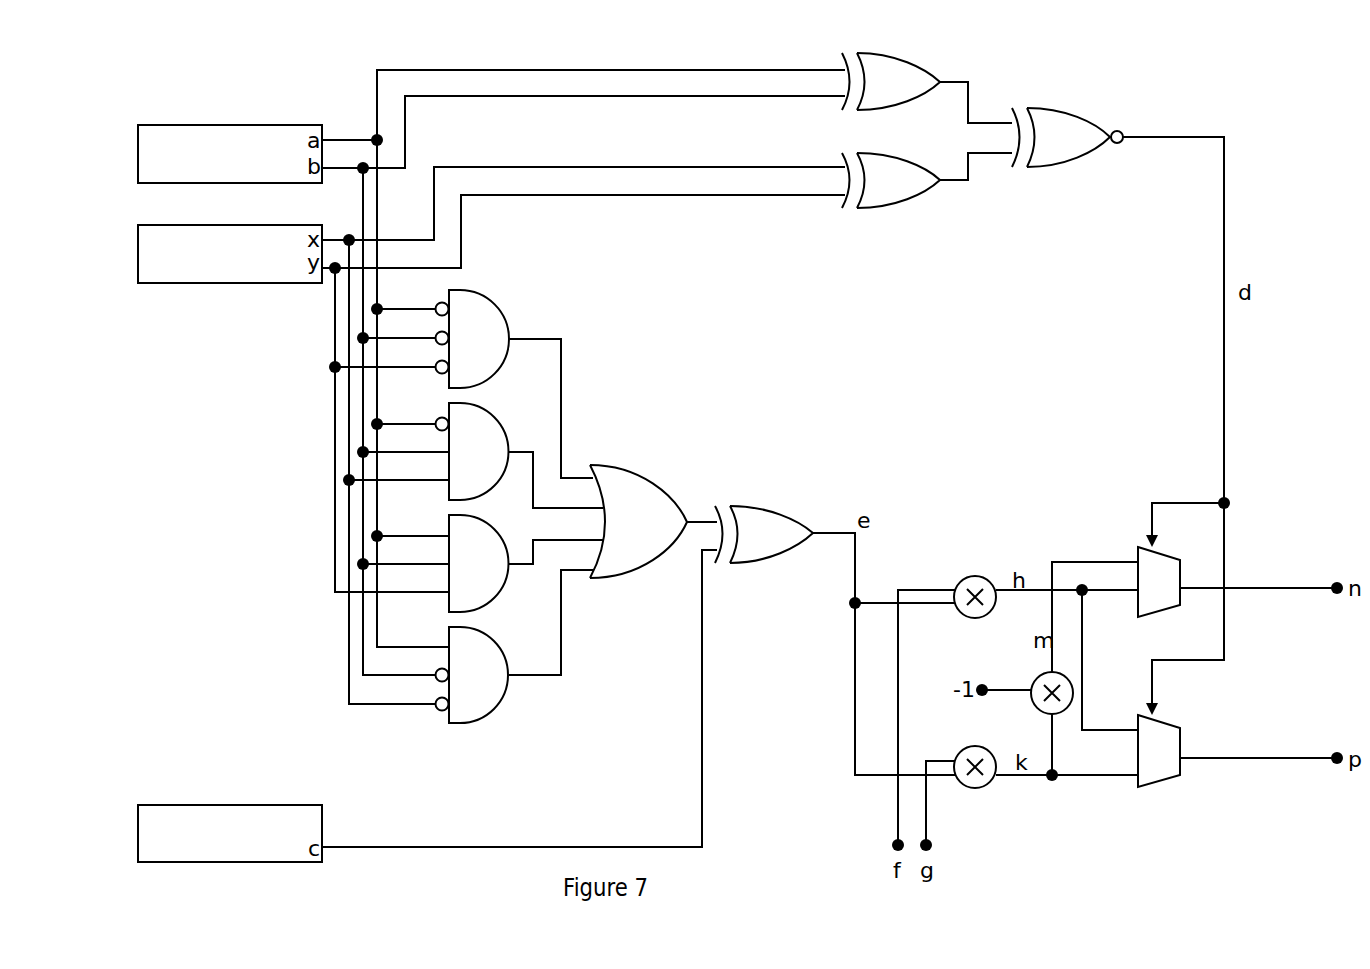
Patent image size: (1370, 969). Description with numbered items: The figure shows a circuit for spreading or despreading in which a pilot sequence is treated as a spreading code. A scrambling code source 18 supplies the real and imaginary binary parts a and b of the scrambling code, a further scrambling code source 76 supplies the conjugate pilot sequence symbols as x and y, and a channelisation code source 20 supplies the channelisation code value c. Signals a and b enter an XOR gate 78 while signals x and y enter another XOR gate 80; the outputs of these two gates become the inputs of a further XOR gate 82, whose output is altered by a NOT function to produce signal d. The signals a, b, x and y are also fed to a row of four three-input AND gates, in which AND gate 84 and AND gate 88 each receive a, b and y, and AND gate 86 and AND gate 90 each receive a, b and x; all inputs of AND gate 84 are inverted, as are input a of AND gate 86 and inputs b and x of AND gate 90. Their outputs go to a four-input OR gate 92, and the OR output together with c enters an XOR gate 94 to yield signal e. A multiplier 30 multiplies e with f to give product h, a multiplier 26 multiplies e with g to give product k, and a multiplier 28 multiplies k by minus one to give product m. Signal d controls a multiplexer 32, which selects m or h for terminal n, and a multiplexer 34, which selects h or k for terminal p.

The scrambling code source 18 is at (250, 125).
The further scrambling code source 76 is at (282, 283).
The channelisation code source 20 is at (193, 805).
The XOR gate 78 is at (883, 110).
The XOR gate 80 is at (883, 208).
The XOR gate 82 is at (1052, 167).
The three-input AND gate 84 is at (490, 290).
The three-input AND gate 86 is at (491, 404).
The three-input AND gate 88 is at (490, 605).
The three-input AND gate 90 is at (487, 720).
The four-input OR gate 92 is at (607, 460).
The XOR gate 94 is at (760, 505).
The multiplier 30 is at (975, 576).
The multiplier 28 is at (1043, 715).
The multiplier 26 is at (975, 788).
The multiplexer 32 is at (1165, 613).
The multiplexer 34 is at (1157, 787).